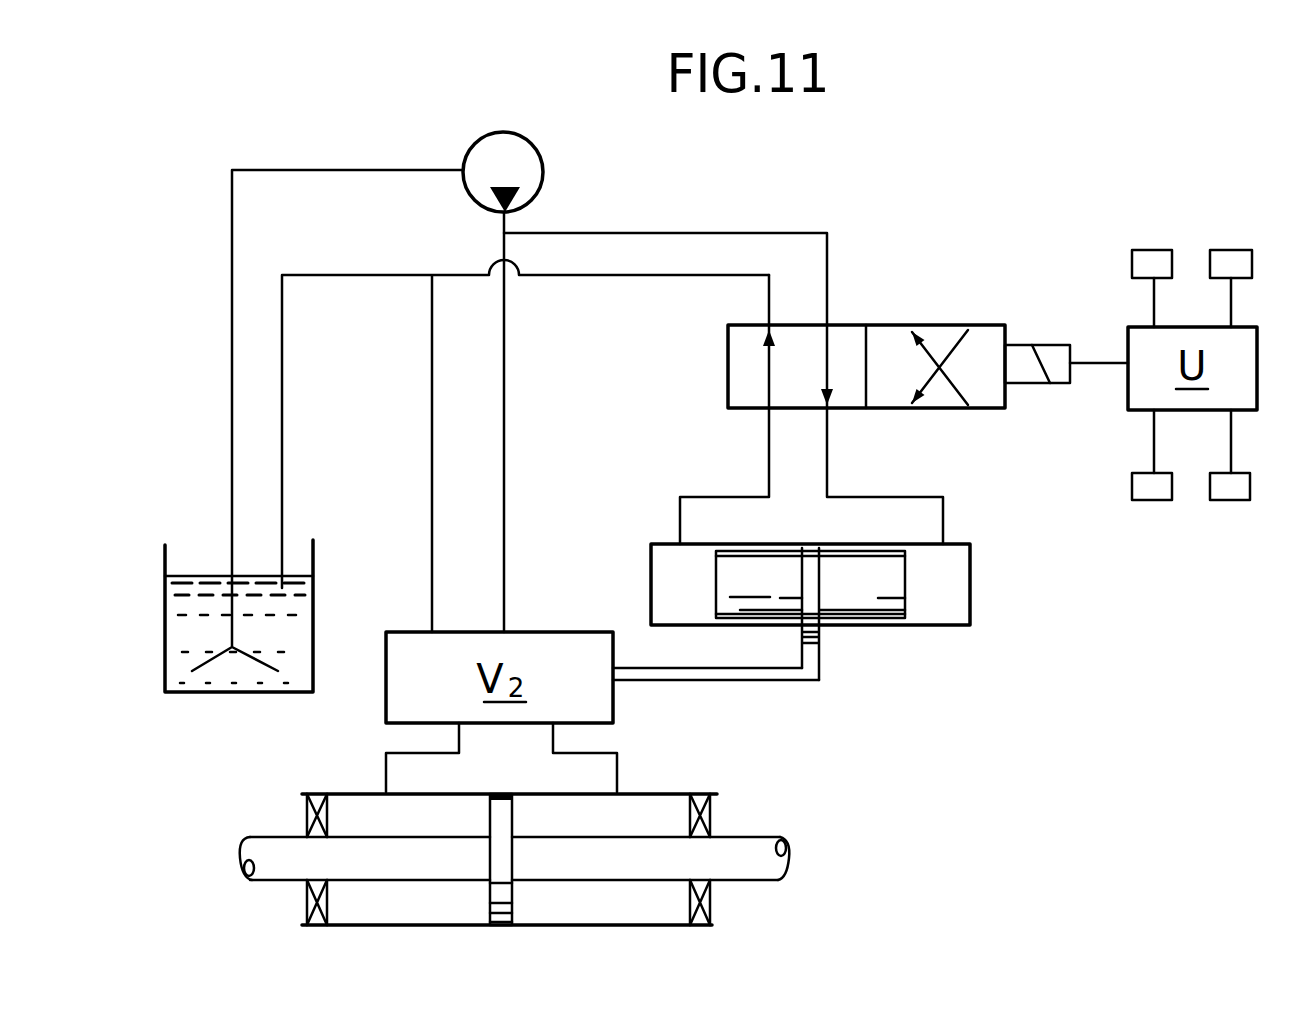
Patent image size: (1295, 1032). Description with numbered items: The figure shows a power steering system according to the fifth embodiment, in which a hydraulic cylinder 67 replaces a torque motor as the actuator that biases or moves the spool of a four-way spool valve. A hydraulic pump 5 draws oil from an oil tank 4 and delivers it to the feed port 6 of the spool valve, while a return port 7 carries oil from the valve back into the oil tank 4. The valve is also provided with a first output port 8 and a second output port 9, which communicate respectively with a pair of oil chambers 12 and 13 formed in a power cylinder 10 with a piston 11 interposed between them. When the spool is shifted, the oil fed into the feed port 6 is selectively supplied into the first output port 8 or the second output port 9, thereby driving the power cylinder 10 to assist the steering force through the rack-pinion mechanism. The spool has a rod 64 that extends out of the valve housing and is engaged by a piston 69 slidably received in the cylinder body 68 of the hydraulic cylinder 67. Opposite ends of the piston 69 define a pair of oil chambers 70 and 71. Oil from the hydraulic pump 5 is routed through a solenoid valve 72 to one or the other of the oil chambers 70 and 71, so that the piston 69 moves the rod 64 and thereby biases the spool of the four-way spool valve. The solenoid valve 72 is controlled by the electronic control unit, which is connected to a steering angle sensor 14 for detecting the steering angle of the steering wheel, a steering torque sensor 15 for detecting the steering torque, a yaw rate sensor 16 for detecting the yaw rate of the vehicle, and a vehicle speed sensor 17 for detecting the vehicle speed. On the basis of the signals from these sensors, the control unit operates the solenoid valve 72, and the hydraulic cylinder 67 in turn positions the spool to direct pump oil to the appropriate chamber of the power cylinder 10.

The oil tank 4 is at (163, 545).
The hydraulic pump 5 is at (543, 168).
The feed port 6 is at (504, 614).
The return port 7 is at (432, 615).
The first output port 8 is at (553, 740).
The second output port 9 is at (459, 743).
The power cylinder 10 is at (515, 826).
The piston 11 is at (512, 897).
The oil chamber 12 is at (575, 800).
The oil chamber 13 is at (440, 800).
The steering angle sensor 14 is at (1148, 250).
The steering torque sensor 15 is at (1232, 250).
The yaw rate sensor 16 is at (1152, 500).
The vehicle speed sensor 17 is at (1228, 500).
The rod 64 is at (722, 683).
The hydraulic cylinder 67 is at (823, 580).
The cylinder body 68 is at (866, 605).
The piston 69 is at (810, 584).
The oil chamber 70 is at (957, 588).
The oil chamber 71 is at (671, 577).
The solenoid valve 72 is at (893, 325).